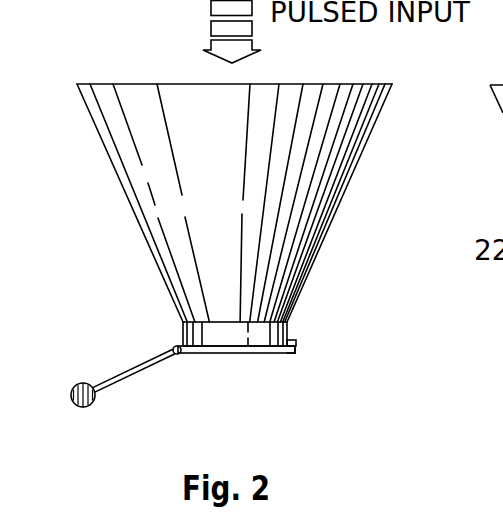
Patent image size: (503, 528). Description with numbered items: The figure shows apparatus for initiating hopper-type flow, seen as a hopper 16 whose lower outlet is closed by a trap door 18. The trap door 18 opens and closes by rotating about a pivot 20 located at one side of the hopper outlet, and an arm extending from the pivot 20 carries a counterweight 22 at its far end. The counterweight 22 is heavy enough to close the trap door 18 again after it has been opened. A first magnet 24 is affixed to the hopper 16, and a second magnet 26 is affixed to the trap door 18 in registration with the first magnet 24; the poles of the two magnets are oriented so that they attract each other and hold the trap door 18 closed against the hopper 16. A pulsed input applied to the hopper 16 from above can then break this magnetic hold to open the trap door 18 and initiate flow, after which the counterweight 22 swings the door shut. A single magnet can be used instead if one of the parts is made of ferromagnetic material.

The hopper 16 is at (127, 207).
The trap door 18 is at (249, 357).
The pivot 20 is at (174, 347).
The counterweight 22 is at (96, 406).
The first magnet 24 is at (292, 342).
The second magnet 26 is at (293, 356).